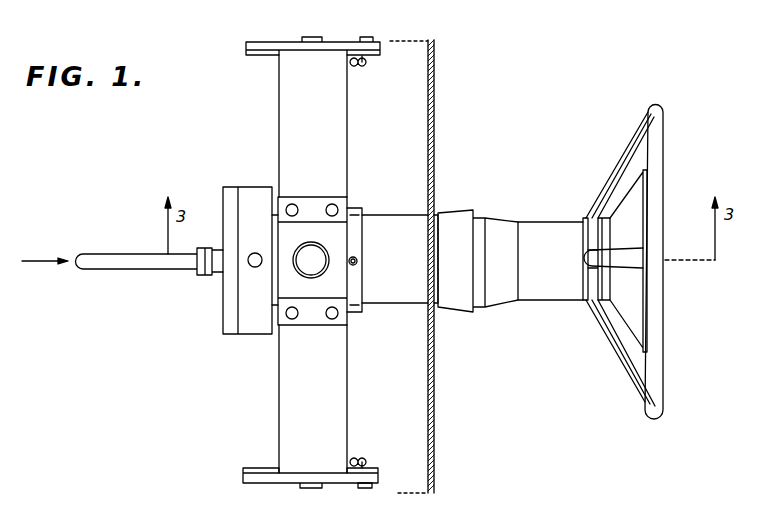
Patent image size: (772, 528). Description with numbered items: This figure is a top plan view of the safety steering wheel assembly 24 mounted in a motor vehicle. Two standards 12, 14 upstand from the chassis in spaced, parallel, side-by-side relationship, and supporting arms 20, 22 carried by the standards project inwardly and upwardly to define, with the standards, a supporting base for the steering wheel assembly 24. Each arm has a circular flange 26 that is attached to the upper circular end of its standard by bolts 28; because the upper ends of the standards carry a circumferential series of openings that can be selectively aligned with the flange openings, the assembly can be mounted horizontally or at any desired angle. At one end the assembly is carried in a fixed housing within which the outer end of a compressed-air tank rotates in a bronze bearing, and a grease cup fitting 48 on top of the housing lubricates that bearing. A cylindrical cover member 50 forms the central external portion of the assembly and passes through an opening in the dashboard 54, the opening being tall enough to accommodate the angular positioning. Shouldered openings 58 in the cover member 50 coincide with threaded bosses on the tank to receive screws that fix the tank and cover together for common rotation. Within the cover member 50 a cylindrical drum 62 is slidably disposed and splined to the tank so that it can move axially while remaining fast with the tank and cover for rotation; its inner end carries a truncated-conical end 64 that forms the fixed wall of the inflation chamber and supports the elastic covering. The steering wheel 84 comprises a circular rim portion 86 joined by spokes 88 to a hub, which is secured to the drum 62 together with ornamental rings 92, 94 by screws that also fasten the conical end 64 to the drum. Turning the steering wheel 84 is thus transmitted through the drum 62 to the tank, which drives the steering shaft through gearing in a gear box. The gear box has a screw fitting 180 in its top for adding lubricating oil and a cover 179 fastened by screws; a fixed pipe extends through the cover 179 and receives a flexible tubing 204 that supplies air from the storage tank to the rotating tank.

The standard 12 is at (328, 490).
The standard 14 is at (344, 46).
The supporting arm 20 is at (338, 156).
The supporting arm 22 is at (343, 390).
The steering wheel assembly 24 is at (474, 208).
The circular flange 26 is at (368, 458).
The bolt 28 is at (365, 488).
The grease cup fitting 48 is at (311, 256).
The cylindrical cover member 50 is at (442, 214).
The dashboard 54 is at (432, 462).
The shouldered opening 58 is at (356, 306).
The cylindrical drum 62 is at (540, 226).
The truncated-conical end 64 is at (635, 220).
The steering wheel 84 is at (665, 118).
The circular rim portion 86 is at (660, 148).
The spokes 88 is at (630, 152).
The ornamental ring 92 is at (585, 303).
The ornamental ring 94 is at (600, 305).
The cover 179 is at (226, 314).
The screw fitting 180 is at (253, 267).
The flexible tubing 204 is at (130, 272).